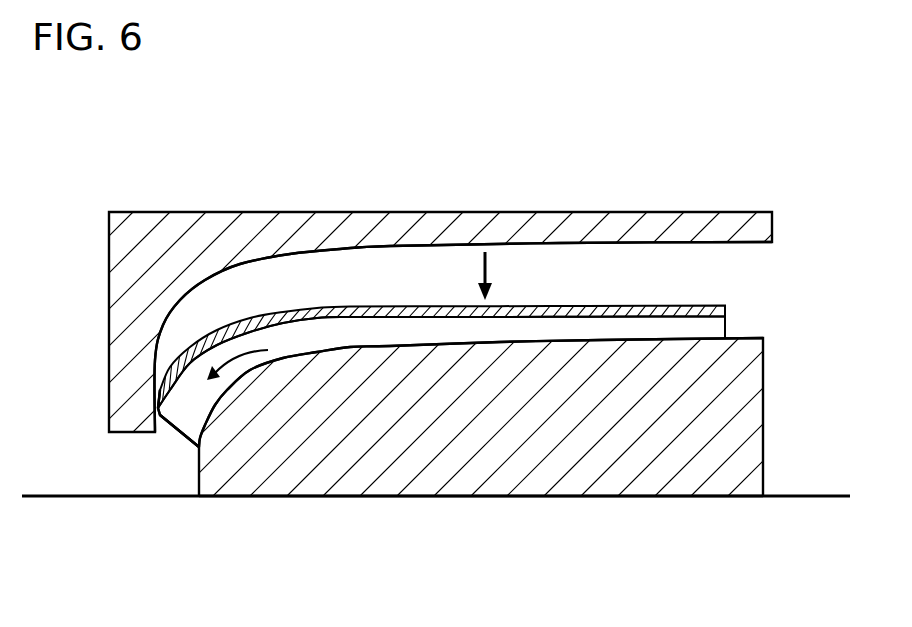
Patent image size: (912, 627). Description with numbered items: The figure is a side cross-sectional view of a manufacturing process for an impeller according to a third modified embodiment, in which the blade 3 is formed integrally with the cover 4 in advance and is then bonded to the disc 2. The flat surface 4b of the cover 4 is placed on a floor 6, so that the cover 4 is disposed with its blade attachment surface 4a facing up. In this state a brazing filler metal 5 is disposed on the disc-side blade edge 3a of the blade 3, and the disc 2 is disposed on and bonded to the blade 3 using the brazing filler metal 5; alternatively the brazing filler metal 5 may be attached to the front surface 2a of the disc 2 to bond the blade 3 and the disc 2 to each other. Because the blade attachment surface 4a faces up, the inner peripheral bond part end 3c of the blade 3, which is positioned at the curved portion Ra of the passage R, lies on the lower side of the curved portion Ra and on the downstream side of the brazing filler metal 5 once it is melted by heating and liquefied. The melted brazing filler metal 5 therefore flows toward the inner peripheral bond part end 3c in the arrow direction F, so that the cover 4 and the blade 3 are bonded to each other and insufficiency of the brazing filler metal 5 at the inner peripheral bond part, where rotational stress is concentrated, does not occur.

The disc 2 is at (431, 212).
The front surface of the disc 2a is at (357, 250).
The blade 3 is at (351, 345).
The disc-side blade edge 3a is at (442, 307).
The inner peripheral bond part end 3c is at (158, 414).
The cover 4 is at (518, 482).
The blade attachment surface 4a is at (595, 340).
The flat surface of the cover 4b is at (613, 497).
The brazing filler metal 5 is at (683, 307).
The floor 6 is at (800, 496).
The arrow direction F is at (233, 362).
The passage R is at (547, 334).
The curved portion Ra is at (188, 413).